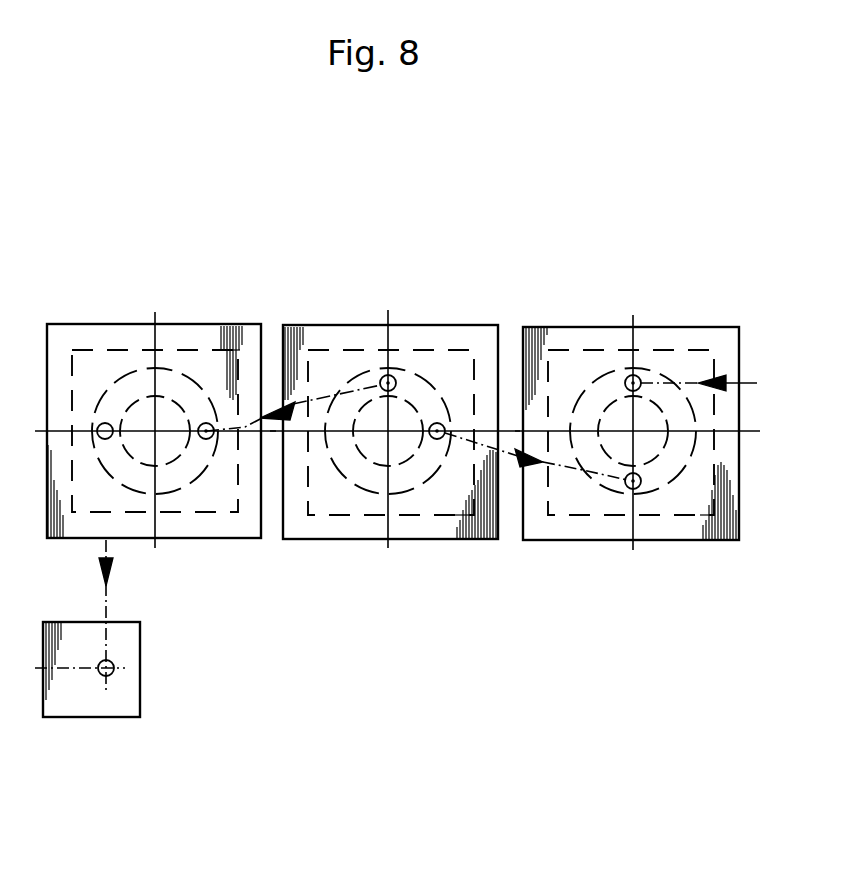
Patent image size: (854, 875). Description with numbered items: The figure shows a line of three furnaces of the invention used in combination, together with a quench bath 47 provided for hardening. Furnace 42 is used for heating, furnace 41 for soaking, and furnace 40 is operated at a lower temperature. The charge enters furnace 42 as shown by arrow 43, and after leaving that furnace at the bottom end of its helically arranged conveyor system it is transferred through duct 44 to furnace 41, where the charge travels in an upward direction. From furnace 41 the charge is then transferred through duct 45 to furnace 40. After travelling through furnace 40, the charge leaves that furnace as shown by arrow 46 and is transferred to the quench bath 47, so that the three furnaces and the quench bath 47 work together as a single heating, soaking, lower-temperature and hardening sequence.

The furnace 40 is at (227, 533).
The furnace 41 is at (408, 532).
The furnace 42 is at (688, 540).
The arrow 43 is at (732, 375).
The duct 44 is at (538, 466).
The duct 45 is at (300, 400).
The arrow 46 is at (110, 553).
The quench bath 47 is at (82, 702).